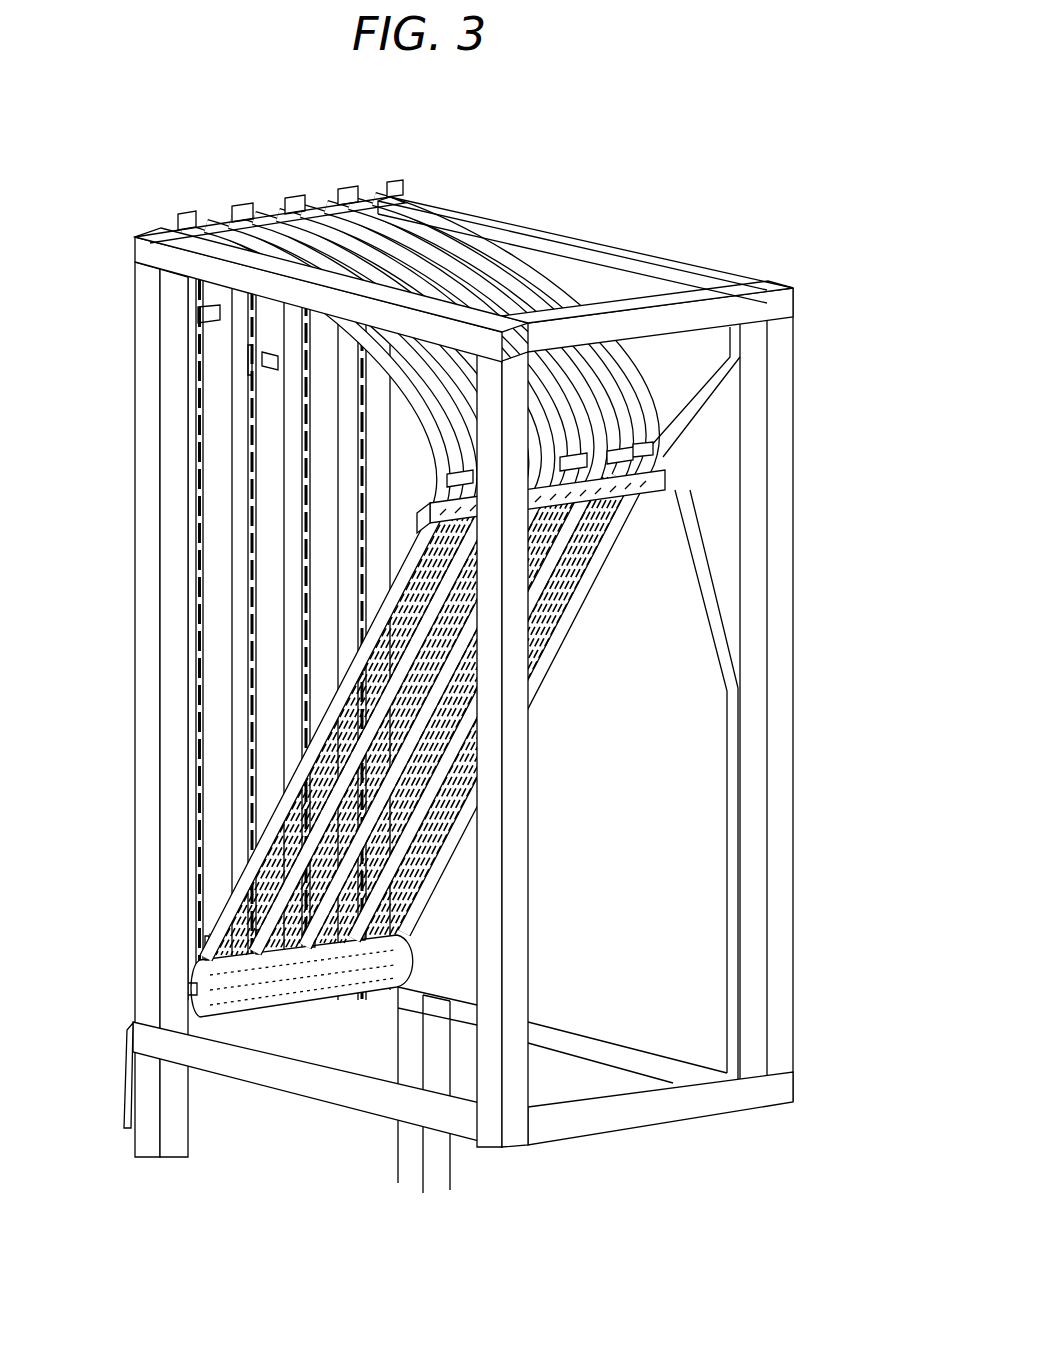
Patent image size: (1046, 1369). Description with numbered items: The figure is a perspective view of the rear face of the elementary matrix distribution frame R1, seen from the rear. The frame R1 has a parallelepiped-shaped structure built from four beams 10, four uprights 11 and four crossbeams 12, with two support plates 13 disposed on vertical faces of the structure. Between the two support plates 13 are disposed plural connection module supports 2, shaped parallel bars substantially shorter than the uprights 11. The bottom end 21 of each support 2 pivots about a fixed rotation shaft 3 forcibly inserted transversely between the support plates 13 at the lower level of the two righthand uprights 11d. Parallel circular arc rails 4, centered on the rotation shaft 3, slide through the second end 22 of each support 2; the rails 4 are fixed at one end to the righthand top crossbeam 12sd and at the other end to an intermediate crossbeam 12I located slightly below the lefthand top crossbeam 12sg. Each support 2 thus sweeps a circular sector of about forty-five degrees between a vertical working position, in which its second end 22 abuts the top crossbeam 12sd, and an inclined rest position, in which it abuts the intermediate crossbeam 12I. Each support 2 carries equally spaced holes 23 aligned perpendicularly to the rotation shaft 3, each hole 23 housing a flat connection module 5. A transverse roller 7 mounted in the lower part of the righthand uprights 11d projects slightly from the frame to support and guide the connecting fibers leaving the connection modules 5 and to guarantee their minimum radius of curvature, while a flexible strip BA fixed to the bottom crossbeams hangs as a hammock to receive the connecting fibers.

The elementary matrix distribution frame R1 is at (702, 192).
The righthand top crossbeam 12sd is at (213, 225).
The second end of support 22 is at (350, 200).
The circular arc rails 4 is at (468, 248).
The support plates 13 is at (593, 262).
The lefthand top crossbeam 12sg is at (740, 308).
The flat connection module 5 is at (198, 318).
The holes 23 is at (203, 430).
The righthand uprights 11d is at (147, 470).
The intermediate crossbeam 12I is at (665, 482).
The connection module supports 2 is at (240, 665).
The uprights 11 is at (785, 758).
The bottom end of support 21 is at (240, 795).
The rotation shaft 3 is at (192, 945).
The transverse roller 7 is at (323, 985).
The flexible strip BA is at (125, 1093).
The beams 10 is at (380, 1100).
The crossbeams 12 is at (667, 1110).